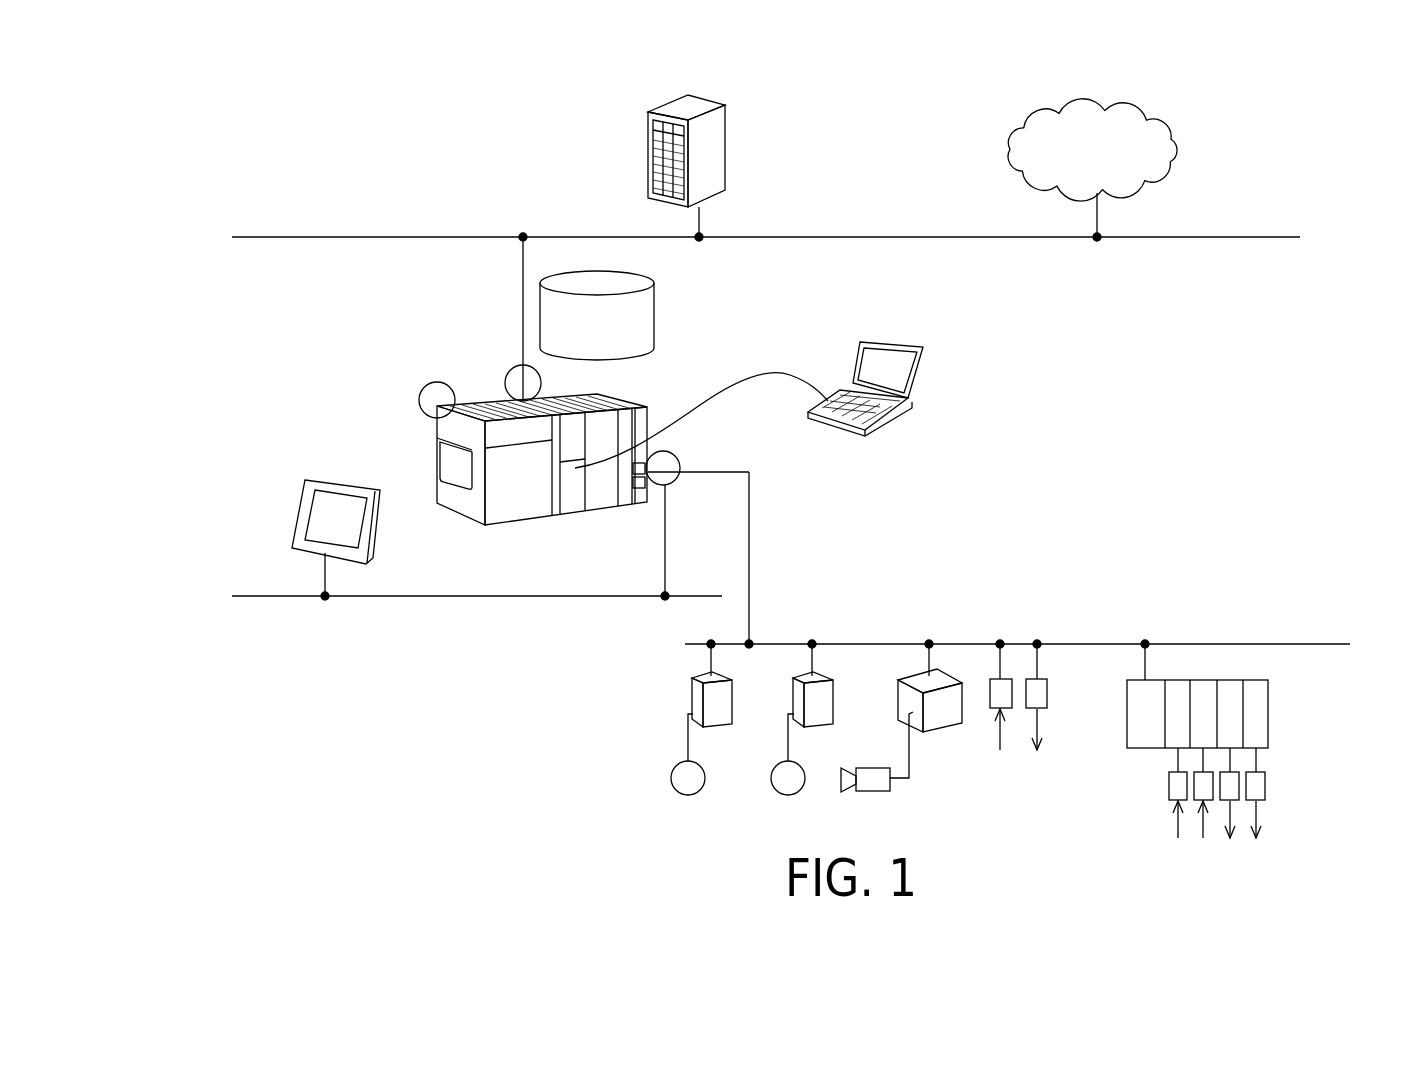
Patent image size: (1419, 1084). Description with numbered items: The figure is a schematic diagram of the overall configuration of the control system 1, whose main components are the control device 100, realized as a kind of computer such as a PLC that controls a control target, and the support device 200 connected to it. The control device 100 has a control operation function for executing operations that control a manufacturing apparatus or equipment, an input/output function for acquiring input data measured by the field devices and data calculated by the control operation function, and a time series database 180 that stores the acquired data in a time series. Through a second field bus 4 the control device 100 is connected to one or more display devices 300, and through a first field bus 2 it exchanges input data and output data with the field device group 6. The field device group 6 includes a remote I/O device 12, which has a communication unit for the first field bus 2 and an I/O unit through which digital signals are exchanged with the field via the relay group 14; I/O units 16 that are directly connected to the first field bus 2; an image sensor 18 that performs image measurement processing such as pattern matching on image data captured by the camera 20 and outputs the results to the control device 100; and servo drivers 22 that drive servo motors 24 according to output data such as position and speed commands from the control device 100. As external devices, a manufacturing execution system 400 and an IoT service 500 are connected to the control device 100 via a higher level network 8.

The control system 1 is at (1281, 99).
The first field bus 2 is at (1340, 645).
The second field bus 4 is at (694, 593).
The field device group 6 is at (1338, 663).
The higher level network 8 is at (1252, 238).
The remote input/output (I/O) device 12 is at (1270, 698).
The relay group 14 is at (1271, 770).
The I/O units 16 is at (1053, 675).
The image sensor 18 is at (895, 692).
The camera 20 is at (872, 792).
The servo driver 22 is at (690, 695).
The servo motor 24 is at (696, 795).
The control device 100 is at (684, 386).
The time series database 180 is at (617, 275).
The support device 200 is at (925, 360).
The display device 300 is at (352, 482).
The manufacturing execution system (MES) 400 is at (728, 137).
The Internet of Things (IoT) service 500 is at (1152, 117).